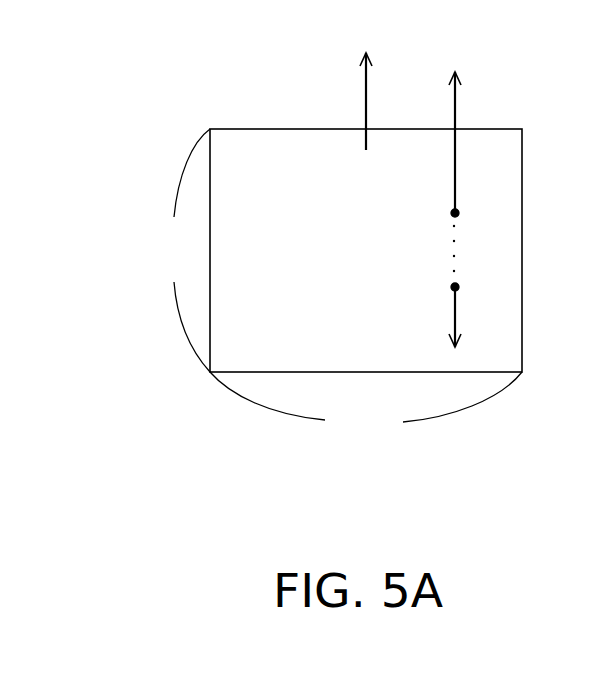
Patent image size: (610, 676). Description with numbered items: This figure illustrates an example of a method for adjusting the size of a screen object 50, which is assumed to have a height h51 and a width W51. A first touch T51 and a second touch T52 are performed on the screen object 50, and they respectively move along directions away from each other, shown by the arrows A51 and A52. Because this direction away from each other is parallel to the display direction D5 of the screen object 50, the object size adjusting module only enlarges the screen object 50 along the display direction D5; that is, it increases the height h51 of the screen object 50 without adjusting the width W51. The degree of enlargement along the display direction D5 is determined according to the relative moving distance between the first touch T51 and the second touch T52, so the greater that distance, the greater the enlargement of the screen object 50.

The screen object 50 is at (522, 250).
The height h51 is at (183, 250).
The width W51 is at (366, 404).
The display direction D5 is at (362, 86).
The arrow A51 is at (450, 316).
The arrow A52 is at (457, 102).
The first touch T51 is at (435, 288).
The second touch T52 is at (435, 213).